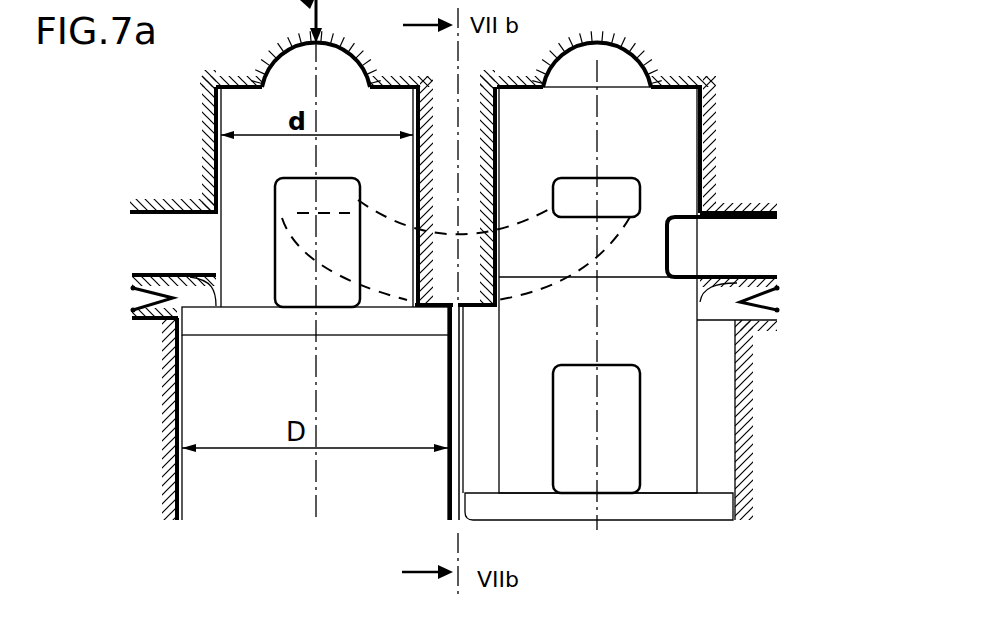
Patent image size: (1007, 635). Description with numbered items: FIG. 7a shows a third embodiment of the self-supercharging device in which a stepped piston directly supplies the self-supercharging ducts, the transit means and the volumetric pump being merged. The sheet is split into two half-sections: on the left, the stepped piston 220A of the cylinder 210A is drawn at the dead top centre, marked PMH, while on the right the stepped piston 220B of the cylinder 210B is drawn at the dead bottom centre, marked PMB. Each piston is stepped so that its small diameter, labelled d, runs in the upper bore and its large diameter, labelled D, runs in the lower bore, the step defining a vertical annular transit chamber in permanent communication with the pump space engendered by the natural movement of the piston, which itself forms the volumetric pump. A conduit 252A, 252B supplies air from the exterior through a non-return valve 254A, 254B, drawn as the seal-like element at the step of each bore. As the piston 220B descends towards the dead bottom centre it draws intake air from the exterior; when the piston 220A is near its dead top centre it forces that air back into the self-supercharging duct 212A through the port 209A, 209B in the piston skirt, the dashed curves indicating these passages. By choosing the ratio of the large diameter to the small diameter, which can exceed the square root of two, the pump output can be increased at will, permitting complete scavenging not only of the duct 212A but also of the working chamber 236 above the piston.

The cylinder 210A is at (207, 121).
The cylinder 210B is at (707, 156).
The working chamber 236 is at (670, 141).
The self-supercharging duct 212A is at (523, 220).
The port 209A is at (362, 267).
The port 209B is at (642, 447).
The stepped piston 220A is at (257, 310).
The stepped piston 220B is at (683, 495).
The non-return valve 254A is at (143, 293).
The non-return valve 254B is at (780, 305).
The conduit 252A is at (157, 322).
The conduit 252B is at (765, 330).
The top dead center PMH is at (212, 87).
The bottom dead center PMB is at (783, 280).